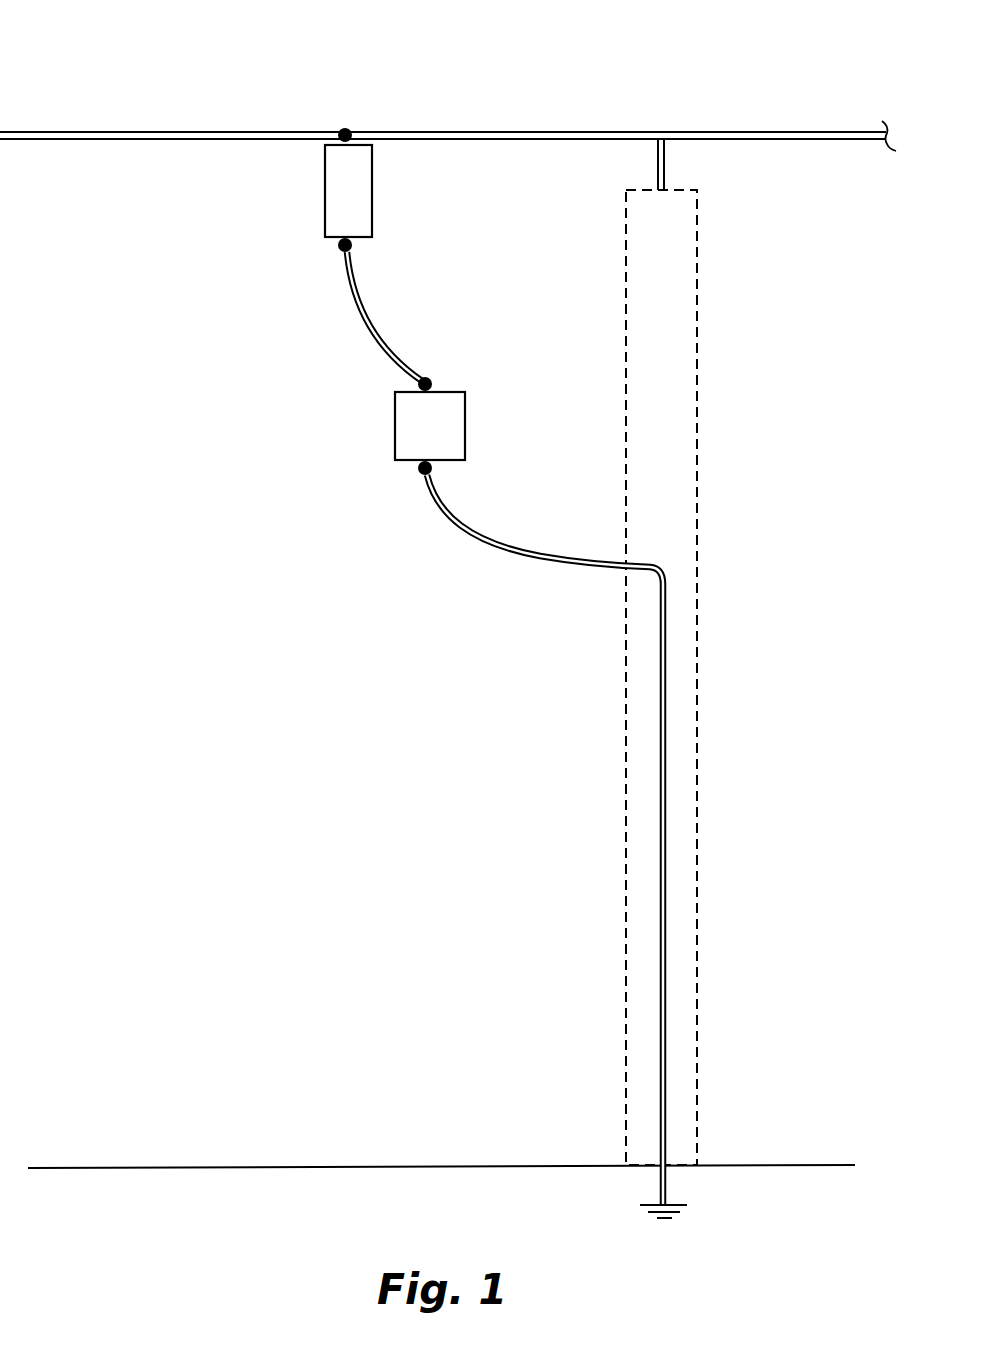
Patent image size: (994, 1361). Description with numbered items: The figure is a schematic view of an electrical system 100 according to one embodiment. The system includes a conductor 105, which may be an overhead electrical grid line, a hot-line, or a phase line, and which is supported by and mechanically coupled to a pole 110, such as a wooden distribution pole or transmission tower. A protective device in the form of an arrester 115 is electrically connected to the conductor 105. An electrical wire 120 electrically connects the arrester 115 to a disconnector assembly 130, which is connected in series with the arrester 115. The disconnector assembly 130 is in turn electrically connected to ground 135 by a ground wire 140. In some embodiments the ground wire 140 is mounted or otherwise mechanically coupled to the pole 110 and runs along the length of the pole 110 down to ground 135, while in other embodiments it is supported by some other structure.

The electrical system 100 is at (64, 35).
The conductor 105 is at (228, 131).
The pole 110 is at (704, 333).
The arrester 115 is at (318, 191).
The electrical wire 120 is at (377, 325).
The disconnector assembly 130 is at (384, 430).
The ground 135 is at (684, 1211).
The ground wire 140 is at (517, 540).